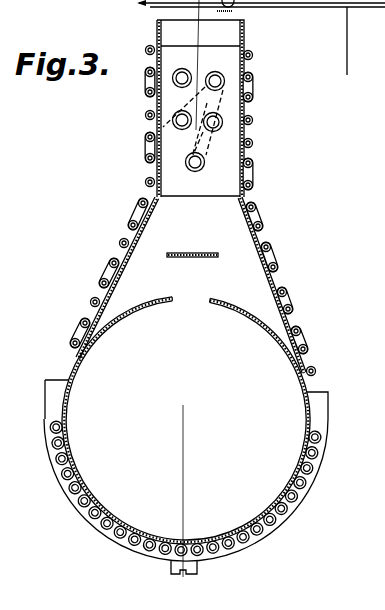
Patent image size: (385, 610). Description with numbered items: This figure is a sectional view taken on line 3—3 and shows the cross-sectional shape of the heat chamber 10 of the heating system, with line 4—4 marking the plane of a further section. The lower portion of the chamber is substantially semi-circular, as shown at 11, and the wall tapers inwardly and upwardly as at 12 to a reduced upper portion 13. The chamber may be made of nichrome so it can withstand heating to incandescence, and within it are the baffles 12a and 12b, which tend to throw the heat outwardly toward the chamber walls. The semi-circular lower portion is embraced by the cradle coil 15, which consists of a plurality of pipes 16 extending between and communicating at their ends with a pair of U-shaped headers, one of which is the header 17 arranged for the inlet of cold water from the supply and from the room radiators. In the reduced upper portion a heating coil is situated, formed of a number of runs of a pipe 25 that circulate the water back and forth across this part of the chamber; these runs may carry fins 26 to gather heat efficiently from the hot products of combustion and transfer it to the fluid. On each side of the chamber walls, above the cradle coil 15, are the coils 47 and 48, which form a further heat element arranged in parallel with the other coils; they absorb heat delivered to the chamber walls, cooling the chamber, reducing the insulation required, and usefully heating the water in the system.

The section line 3— 3 is at (262, 57).
The section line 4— 4 is at (202, 528).
The heat chamber 10 is at (242, 226).
The semi-circular lower portion 11 is at (303, 430).
The tapering portion 12 is at (278, 283).
The baffle 12a is at (170, 301).
The baffle 12b is at (199, 253).
The reduced upper portion 13 is at (246, 107).
The cradle coil 15 is at (56, 491).
The pipes 16 is at (306, 483).
The header 17 is at (320, 407).
The pipe 25 is at (163, 127).
The fins 26 is at (162, 99).
The coil 47 is at (248, 172).
The coil 48 is at (120, 252).